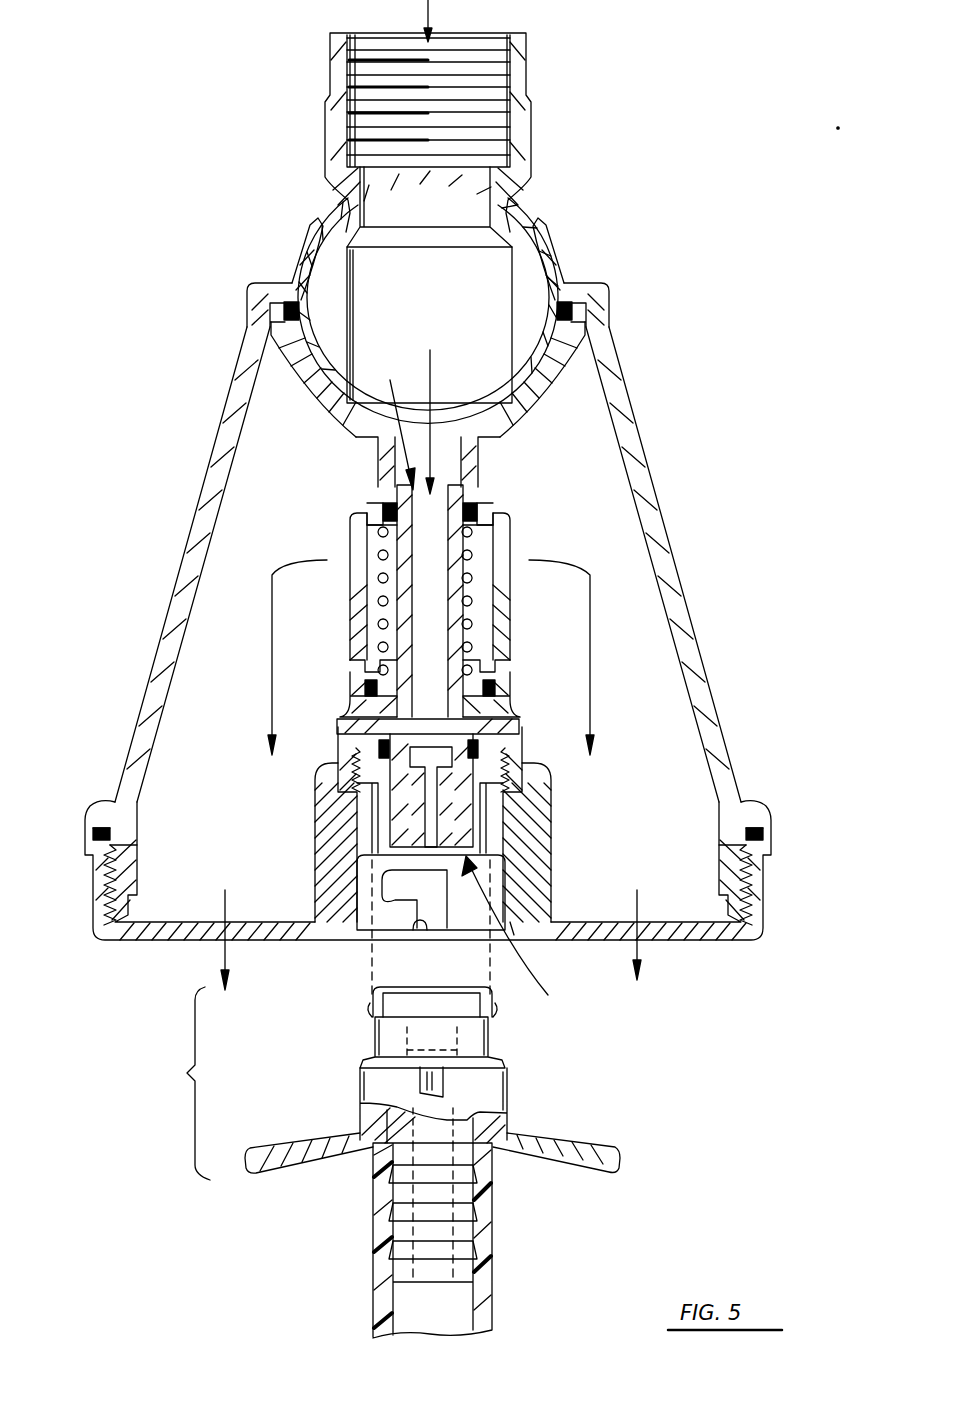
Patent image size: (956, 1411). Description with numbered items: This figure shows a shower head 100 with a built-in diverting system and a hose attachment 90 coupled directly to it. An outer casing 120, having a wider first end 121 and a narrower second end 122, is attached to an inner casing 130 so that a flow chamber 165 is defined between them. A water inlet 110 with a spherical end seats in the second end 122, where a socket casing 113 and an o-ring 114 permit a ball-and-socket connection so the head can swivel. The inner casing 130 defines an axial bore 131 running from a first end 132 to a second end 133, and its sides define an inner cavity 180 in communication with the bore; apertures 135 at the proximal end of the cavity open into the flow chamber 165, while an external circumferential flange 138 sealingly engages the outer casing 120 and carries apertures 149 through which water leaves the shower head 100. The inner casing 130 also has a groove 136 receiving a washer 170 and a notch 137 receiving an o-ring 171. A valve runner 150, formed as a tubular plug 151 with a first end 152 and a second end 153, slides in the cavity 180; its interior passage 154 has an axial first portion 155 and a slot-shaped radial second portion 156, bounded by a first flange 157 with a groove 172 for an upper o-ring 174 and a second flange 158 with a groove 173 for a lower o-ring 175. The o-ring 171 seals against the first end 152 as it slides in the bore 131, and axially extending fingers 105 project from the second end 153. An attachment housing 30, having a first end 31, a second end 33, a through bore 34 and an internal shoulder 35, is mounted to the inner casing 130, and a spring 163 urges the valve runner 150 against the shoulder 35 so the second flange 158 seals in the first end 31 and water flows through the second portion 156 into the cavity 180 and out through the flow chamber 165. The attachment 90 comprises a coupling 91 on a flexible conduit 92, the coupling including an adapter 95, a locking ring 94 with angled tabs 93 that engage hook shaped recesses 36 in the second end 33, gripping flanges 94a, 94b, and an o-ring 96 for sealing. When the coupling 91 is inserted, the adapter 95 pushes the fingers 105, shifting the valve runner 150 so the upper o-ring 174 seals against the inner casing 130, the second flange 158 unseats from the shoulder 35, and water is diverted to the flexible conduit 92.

The shower head 100 is at (215, 235).
The water inlet 110 is at (548, 120).
The socket casing 113 is at (598, 364).
The o-ring 114 is at (566, 312).
The outer casing 120 is at (648, 410).
The first end 121 is at (125, 792).
The second end 122 is at (312, 226).
The inner casing 130 is at (775, 908).
The axial bore 131 is at (446, 430).
The first end 132 is at (345, 438).
The second end 133 is at (553, 868).
The apertures 135 is at (352, 522).
The interior circumferential groove 136 is at (383, 530).
The interior circumferential notch 137 is at (512, 490).
The external circumferential flange 138 is at (165, 942).
The apertures 149 is at (185, 940).
The valve runner 150 is at (449, 609).
The tubular shaped plug 151 is at (366, 672).
The first end 152 is at (385, 500).
The second end 153 is at (400, 868).
The interior passage 154 is at (398, 422).
The first portion 155 is at (445, 548).
The second portion 156 is at (385, 717).
The first flange 157 is at (496, 672).
The second flange 158 is at (505, 762).
The spring 163 is at (393, 618).
The flow chamber 165 is at (660, 655).
The washer 170 is at (478, 508).
The o-ring 171 is at (384, 506).
The groove 172 is at (494, 688).
The groove 173 is at (483, 752).
The upper o-ring 174 is at (366, 686).
The lower o-ring 175 is at (380, 748).
The inner cavity 180 is at (492, 620).
The attachment housing 30 is at (517, 940).
The first end 31 is at (500, 717).
The second end 33 is at (532, 900).
The through bore 34 is at (514, 935).
The internal shoulder 35 is at (540, 810).
The hook shaped recess 36 is at (405, 935).
The attachment 90 is at (473, 1162).
The coupling 91 is at (179, 1083).
The flexible conduit 92 is at (378, 1310).
The tab 93 is at (450, 1080).
The locking ring 94 is at (365, 1085).
The flange 94a is at (297, 1165).
The flange 94b is at (620, 1162).
The adapter 95 is at (492, 1045).
The o-ring 96 is at (372, 1010).
The fingers 105 is at (420, 828).